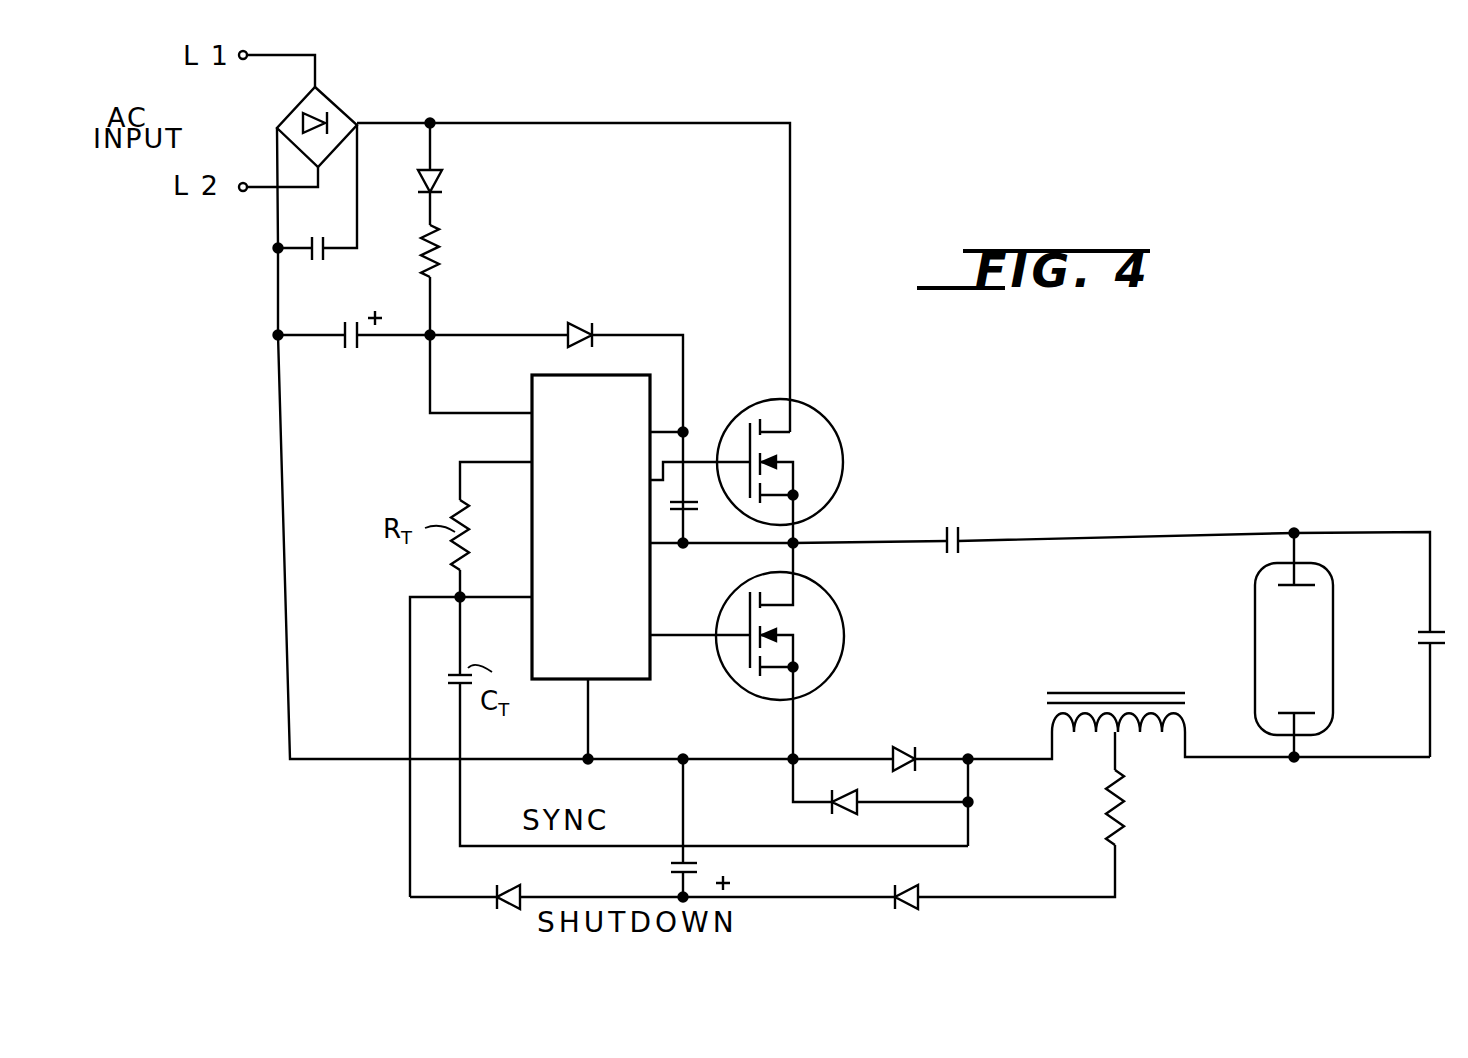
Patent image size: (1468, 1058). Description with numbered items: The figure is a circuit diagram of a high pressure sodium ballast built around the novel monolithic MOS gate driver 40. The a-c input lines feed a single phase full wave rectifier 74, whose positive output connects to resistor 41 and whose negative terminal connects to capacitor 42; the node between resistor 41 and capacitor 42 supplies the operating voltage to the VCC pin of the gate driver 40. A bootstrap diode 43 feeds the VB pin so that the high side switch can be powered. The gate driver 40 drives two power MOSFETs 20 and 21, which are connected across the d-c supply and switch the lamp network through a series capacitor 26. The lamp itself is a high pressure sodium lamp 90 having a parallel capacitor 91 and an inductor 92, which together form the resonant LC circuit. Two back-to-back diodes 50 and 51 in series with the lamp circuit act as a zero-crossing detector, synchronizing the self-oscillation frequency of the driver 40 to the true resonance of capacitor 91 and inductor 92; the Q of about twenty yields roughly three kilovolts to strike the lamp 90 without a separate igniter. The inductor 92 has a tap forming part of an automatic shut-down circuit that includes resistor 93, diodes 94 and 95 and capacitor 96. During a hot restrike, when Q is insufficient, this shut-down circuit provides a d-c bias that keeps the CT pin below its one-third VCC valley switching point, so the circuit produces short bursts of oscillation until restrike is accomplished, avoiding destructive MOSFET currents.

The single phase full wave rectifier 74 is at (343, 107).
The resistor 41 is at (447, 277).
The capacitor 42 is at (349, 363).
The diode 43 is at (585, 313).
The monolithic MOS gate driver 40 is at (616, 680).
The power MOSFET 20 is at (843, 443).
The power MOSFET 21 is at (845, 625).
The series L-C circuit capacitor 26 is at (964, 532).
The zero-crossing detector diode 50 is at (903, 733).
The zero-crossing detector diode 51 is at (845, 815).
The high pressure sodium lamp 90 is at (1255, 622).
The parallel capacitor 91 is at (1415, 635).
The inductor 92 is at (1087, 735).
The resistor 93 is at (1127, 813).
The diode 94 is at (927, 890).
The diode 95 is at (510, 882).
The capacitor 96 is at (660, 868).